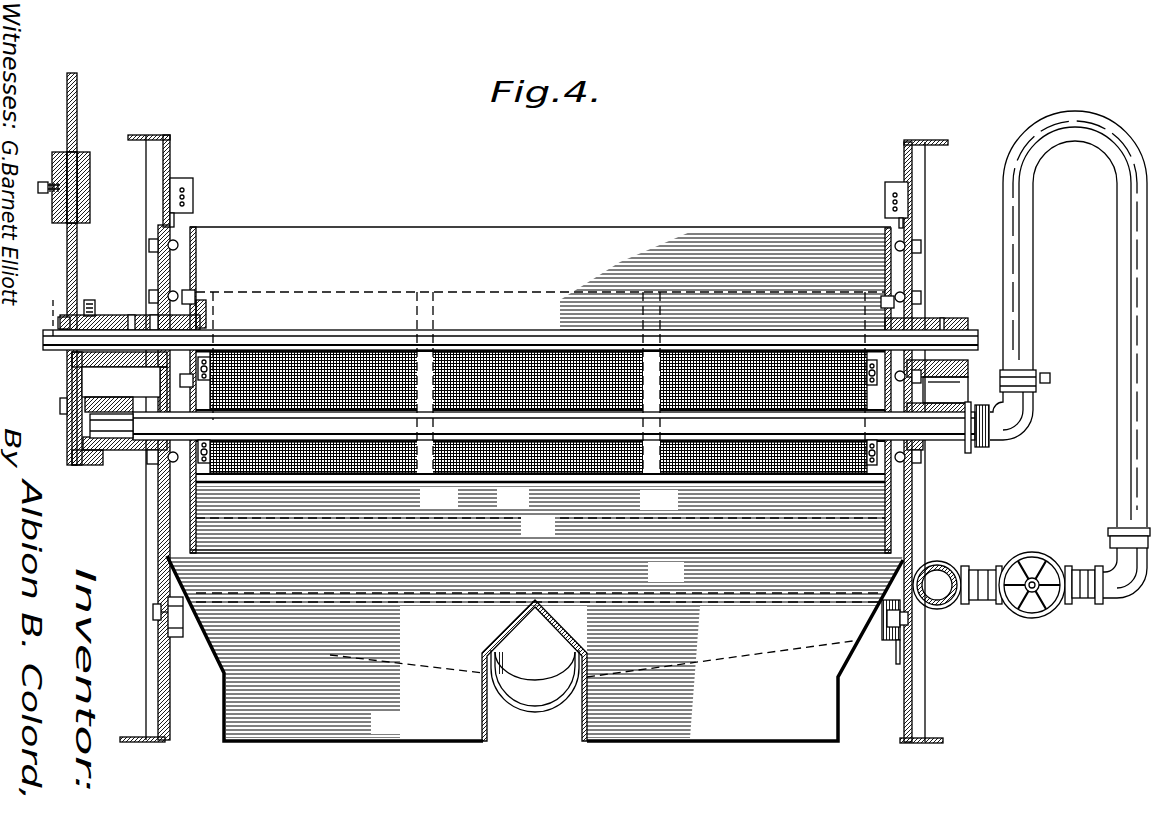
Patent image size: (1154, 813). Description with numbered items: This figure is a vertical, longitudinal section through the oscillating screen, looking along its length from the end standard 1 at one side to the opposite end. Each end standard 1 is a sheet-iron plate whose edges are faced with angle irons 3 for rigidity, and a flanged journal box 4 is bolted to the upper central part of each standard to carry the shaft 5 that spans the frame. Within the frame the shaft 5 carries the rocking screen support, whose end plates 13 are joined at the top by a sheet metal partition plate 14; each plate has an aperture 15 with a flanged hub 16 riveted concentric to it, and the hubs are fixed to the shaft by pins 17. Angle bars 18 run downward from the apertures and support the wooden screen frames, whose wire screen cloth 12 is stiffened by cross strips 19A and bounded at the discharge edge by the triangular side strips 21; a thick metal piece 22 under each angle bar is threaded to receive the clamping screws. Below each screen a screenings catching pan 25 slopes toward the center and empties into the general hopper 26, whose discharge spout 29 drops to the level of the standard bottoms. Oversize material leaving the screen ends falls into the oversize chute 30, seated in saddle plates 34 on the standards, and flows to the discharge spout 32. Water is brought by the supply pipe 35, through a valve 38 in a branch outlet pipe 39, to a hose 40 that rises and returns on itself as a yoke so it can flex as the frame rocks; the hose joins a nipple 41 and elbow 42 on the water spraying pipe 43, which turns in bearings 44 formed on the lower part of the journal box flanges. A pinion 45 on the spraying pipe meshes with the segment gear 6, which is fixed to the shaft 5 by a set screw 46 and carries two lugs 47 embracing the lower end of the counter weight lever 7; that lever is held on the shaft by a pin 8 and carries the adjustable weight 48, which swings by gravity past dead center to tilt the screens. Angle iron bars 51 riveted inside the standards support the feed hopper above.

The end standard 1 is at (158, 528).
The angle iron 3 is at (150, 135).
The flanged journal box 4 is at (138, 315).
The shaft 5 is at (553, 342).
The segment gear 6 is at (82, 378).
The counter weight lever 7 is at (67, 268).
The pin 8 is at (58, 321).
The wire screen cloth 12 is at (338, 352).
The end plate 13 is at (196, 248).
The partition plate 14 is at (689, 290).
The aperture 15 is at (222, 329).
The flanged hub 16 is at (200, 322).
The pin 17 is at (190, 294).
The angle bar 18 is at (203, 476).
The cross strip 19A is at (426, 474).
The side strip 21 is at (500, 482).
The metal piece 22 is at (208, 441).
The screenings catching pan 25 is at (540, 517).
The general hopper 26 is at (535, 581).
The discharge spout 29 is at (535, 648).
The oversize chute 30 is at (186, 638).
The discharge spout 32 is at (535, 702).
The saddle plate 34 is at (160, 636).
The water supply pipe 35 is at (938, 578).
The valve 38 is at (1000, 570).
The branch outlet pipe 39 is at (1075, 604).
The hose 40 is at (1117, 490).
The nipple 41 is at (1036, 391).
The elbow 42 is at (1028, 432).
The water spraying pipe 43 is at (983, 447).
The bearing 44 is at (130, 450).
The pinion 45 is at (108, 398).
The set screw 46 is at (90, 300).
The lug 47 is at (60, 406).
The weight 48 is at (90, 208).
The angle iron bar 51 is at (193, 194).